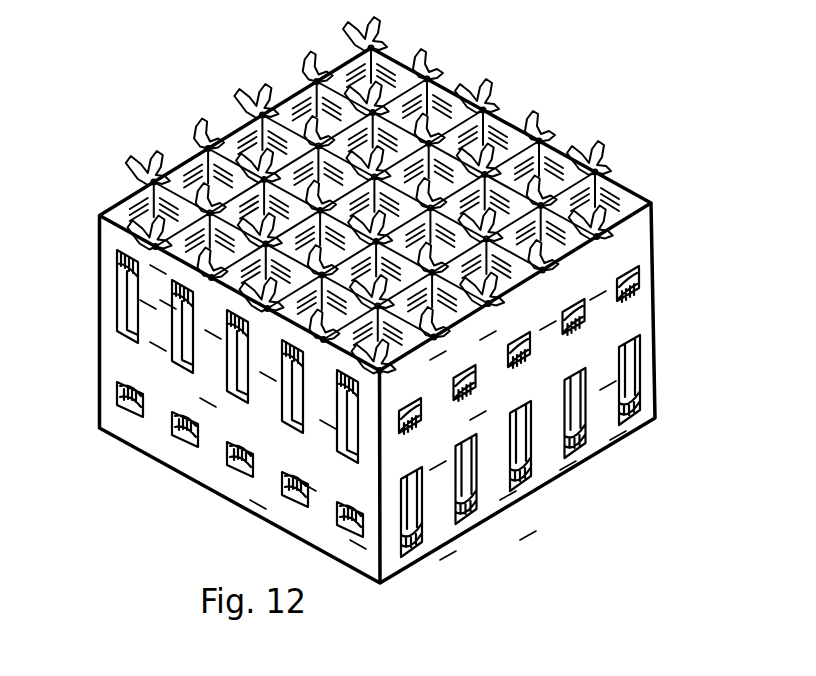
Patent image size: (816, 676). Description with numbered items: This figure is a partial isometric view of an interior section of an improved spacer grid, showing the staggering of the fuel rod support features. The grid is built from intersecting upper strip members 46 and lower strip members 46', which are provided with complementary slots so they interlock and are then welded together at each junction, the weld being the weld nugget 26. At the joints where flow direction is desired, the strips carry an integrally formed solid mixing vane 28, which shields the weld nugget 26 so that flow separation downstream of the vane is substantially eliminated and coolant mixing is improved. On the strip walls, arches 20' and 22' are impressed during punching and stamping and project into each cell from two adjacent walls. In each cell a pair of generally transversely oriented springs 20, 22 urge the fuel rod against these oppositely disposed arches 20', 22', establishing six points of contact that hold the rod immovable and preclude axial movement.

The spring 20 is at (554, 444).
The stop member 20' is at (557, 342).
The spring 22 is at (237, 363).
The stop member 22' is at (240, 466).
The weld nugget 26 is at (513, 124).
The mixing vane 28 is at (482, 90).
The upper strip member 46 is at (392, 315).
The lower strip member 46' is at (376, 263).